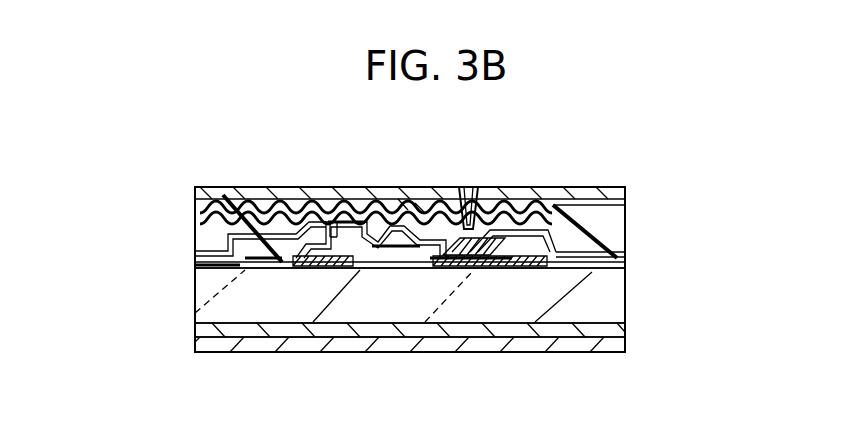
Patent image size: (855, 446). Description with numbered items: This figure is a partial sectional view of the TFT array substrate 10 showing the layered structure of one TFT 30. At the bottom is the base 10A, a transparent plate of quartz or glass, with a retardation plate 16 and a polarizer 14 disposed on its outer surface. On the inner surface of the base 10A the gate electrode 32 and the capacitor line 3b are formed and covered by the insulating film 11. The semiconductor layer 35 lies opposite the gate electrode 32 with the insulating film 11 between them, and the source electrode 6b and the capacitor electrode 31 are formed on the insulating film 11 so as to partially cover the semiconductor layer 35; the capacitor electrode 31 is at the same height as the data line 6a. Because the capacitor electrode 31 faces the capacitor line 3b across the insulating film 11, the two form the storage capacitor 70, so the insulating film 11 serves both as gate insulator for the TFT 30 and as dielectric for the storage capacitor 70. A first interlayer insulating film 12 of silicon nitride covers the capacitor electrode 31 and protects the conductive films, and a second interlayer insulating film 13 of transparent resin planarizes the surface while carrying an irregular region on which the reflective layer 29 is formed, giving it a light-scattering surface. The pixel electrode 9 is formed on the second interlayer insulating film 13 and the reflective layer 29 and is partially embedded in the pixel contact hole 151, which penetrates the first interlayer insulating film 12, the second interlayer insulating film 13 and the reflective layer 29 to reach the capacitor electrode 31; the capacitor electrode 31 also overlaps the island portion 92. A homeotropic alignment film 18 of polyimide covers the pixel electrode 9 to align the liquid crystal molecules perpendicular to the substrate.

The TFT array substrate 10 is at (190, 350).
The base 10A is at (620, 302).
The insulating film 11 is at (440, 322).
The first interlayer insulating film 12 is at (627, 255).
The second interlayer insulating film 13 is at (443, 185).
The polarizer 14 is at (622, 350).
The retardation plate 16 is at (620, 332).
The homeotropic alignment film 18 is at (627, 197).
The reflective layer 29 is at (533, 200).
The pixel electrode 9 is at (583, 190).
The island portion 92 is at (420, 190).
The pixel contact hole 151 is at (463, 190).
The TFT 30 is at (367, 323).
The capacitor electrode 31 is at (412, 246).
The gate electrode 32 is at (333, 253).
The semiconductor layer 35 is at (310, 246).
The capacitor line 3b is at (528, 267).
The data line 6a is at (255, 250).
The source electrode 6b is at (285, 250).
The storage capacitor 70 is at (552, 274).